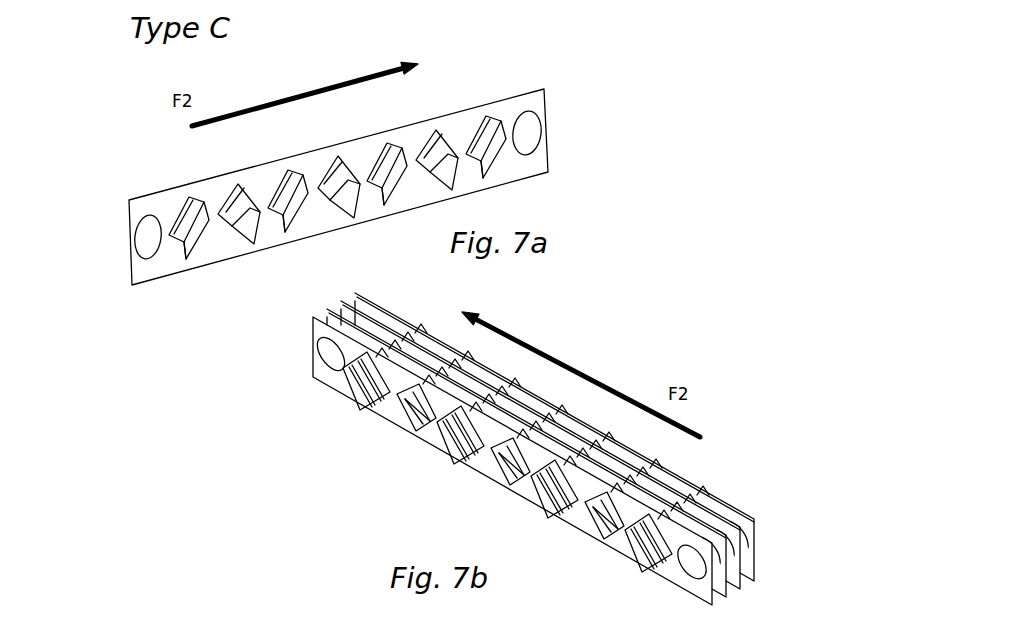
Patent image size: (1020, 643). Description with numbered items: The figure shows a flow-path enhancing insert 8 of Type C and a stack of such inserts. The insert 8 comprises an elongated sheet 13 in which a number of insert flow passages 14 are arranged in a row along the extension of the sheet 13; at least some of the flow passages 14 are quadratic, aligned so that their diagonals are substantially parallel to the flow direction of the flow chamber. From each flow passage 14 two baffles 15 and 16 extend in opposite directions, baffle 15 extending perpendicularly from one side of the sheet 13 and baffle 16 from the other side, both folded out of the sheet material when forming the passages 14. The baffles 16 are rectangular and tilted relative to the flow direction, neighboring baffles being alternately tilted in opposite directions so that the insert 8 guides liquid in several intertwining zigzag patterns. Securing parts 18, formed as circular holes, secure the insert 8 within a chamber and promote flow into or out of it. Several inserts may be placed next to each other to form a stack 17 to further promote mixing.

In FIG. 7A, the flow-path enhancing insert 8 is at (157, 314).
In FIG. 7A, the elongated sheet 13 is at (152, 267).
In FIG. 7A, the insert flow passage 14 is at (192, 239).
In FIG. 7A, the baffle 15 is at (497, 125).
In FIG. 7A, the baffle 16 is at (441, 136).
In FIG. 7B, the stack of inserts 17 is at (362, 439).
In FIG. 7A, the securing part 18 is at (151, 235).